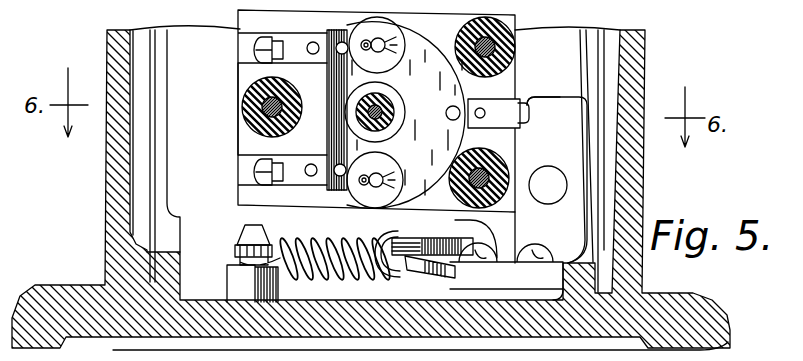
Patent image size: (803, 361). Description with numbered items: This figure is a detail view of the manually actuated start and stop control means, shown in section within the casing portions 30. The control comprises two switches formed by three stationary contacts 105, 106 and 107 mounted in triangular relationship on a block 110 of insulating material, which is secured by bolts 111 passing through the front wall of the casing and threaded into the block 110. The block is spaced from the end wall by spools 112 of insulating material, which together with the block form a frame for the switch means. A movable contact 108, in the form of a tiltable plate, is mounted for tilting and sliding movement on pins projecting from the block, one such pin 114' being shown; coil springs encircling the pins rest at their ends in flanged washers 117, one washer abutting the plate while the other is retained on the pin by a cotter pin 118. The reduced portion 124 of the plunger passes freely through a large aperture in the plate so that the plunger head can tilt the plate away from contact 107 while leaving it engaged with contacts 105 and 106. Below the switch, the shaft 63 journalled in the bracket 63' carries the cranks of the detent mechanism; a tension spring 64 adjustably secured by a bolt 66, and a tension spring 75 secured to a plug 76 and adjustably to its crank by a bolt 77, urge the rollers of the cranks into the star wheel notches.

The housing 30 is at (110, 198).
The shaft 63 is at (436, 146).
The bracket 63' is at (549, 113).
The tension spring 64 is at (357, 270).
The bolt 66 is at (430, 276).
The tension spring 75 is at (395, 232).
The plug 76 is at (230, 282).
The bolt 77 is at (440, 241).
The stationary contact 105 is at (262, 172).
The stationary contact 106 is at (283, 56).
The stationary contact 107 is at (502, 110).
The movable contact 108 is at (438, 100).
The block of insulating material 110 is at (247, 146).
The bolts 111 is at (240, 113).
The spools of insulating material 112 is at (242, 95).
The pivot pin 114' is at (346, 41).
The flanged washers 117 is at (368, 193).
The cotter pin 118 is at (362, 44).
The portion of the plunger 124 is at (373, 125).